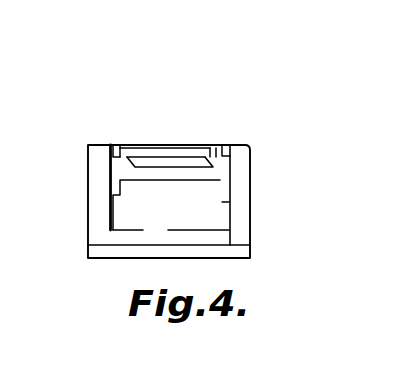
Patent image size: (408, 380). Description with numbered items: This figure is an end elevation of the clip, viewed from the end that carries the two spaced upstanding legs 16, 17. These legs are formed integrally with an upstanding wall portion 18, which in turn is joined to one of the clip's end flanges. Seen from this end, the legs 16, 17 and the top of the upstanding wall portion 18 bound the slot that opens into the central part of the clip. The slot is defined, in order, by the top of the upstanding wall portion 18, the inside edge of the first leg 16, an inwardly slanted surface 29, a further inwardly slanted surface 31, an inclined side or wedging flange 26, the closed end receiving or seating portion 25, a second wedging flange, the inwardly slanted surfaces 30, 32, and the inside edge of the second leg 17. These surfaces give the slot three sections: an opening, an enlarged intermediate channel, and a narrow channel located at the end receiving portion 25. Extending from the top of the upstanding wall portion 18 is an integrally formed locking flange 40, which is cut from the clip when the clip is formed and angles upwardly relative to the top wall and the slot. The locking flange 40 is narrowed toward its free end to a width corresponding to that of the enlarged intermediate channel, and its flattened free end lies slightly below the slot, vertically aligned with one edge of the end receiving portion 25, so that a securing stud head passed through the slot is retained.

The upstanding leg 16 is at (238, 167).
The upstanding leg 17 is at (95, 186).
The upstanding wall portion 18 is at (125, 233).
The end receiving portion 25 is at (163, 149).
The inclined side or wedging flange 26 is at (218, 180).
The inwardly slanted surface 29 is at (226, 147).
The inwardly slanted surface 30 is at (113, 146).
The inwardly slanted surface 31 is at (214, 148).
The inwardly slanted surface 32 is at (121, 147).
The locking flange 40 is at (174, 211).